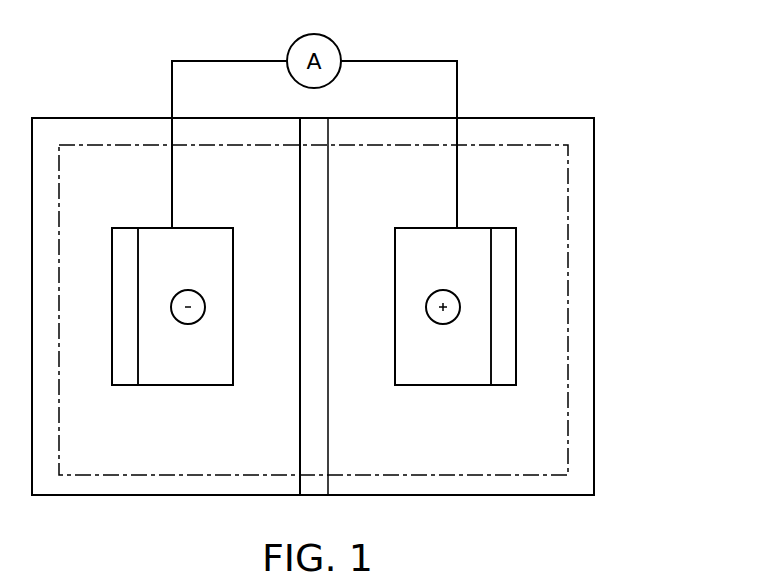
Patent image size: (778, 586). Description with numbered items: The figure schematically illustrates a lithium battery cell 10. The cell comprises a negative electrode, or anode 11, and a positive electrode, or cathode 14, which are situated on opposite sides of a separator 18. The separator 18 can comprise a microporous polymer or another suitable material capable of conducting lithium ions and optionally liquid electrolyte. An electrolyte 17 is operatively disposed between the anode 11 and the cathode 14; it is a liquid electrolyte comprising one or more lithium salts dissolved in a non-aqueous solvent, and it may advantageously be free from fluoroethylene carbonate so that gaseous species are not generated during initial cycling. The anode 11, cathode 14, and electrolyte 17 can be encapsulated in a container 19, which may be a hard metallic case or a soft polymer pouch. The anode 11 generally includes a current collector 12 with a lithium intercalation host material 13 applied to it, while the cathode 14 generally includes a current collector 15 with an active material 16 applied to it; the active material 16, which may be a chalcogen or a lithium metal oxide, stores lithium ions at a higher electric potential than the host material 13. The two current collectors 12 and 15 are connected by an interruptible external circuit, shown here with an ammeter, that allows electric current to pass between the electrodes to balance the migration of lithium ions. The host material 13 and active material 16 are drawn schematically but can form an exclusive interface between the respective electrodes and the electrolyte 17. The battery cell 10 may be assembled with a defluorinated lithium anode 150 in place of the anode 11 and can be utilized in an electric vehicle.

The lithium battery cell 10 is at (600, 93).
The negative electrode (anode) 11 is at (150, 344).
The lithium anode 150 is at (150, 344).
The current collector 12 is at (196, 375).
The lithium intercalation host material 13 is at (128, 310).
The positive electrode (cathode) 14 is at (479, 345).
The current collector 15 is at (436, 378).
The active material 16 is at (501, 316).
The electrolyte 17 is at (278, 424).
The separator 18 is at (318, 197).
The container 19 is at (596, 320).